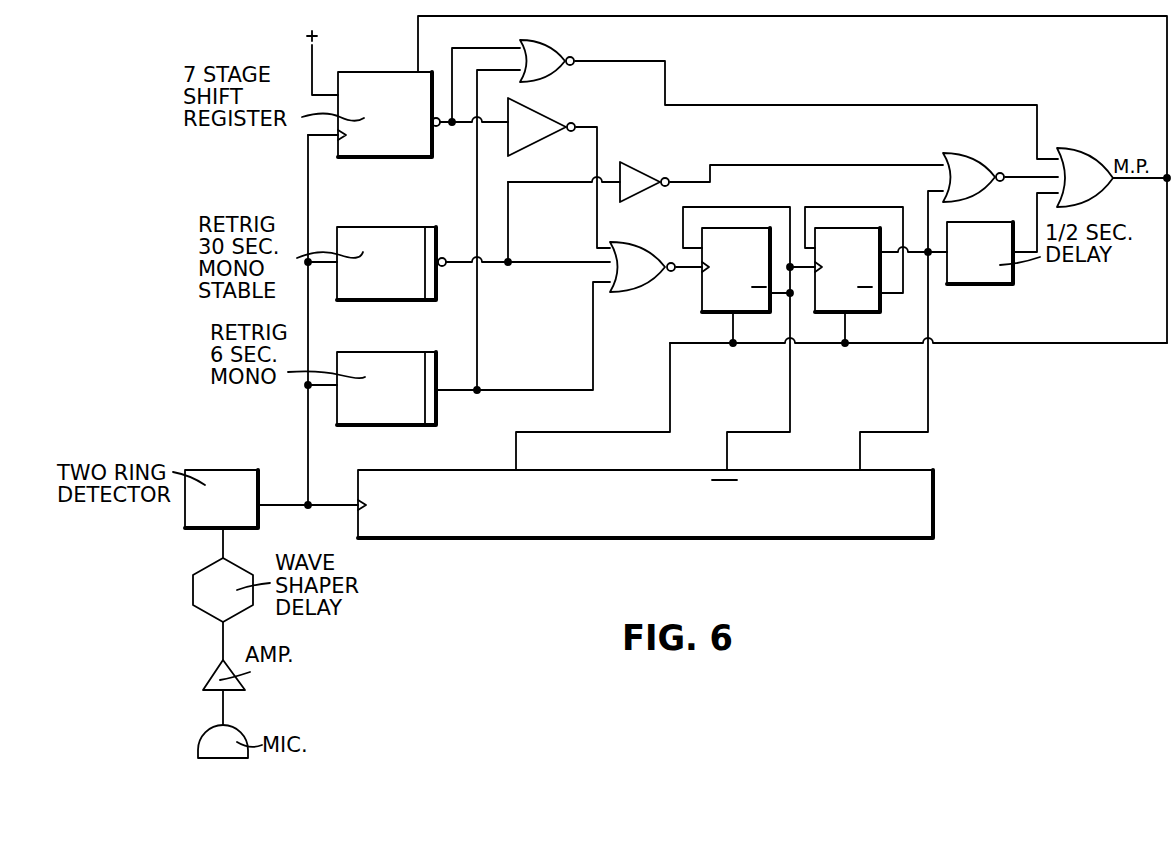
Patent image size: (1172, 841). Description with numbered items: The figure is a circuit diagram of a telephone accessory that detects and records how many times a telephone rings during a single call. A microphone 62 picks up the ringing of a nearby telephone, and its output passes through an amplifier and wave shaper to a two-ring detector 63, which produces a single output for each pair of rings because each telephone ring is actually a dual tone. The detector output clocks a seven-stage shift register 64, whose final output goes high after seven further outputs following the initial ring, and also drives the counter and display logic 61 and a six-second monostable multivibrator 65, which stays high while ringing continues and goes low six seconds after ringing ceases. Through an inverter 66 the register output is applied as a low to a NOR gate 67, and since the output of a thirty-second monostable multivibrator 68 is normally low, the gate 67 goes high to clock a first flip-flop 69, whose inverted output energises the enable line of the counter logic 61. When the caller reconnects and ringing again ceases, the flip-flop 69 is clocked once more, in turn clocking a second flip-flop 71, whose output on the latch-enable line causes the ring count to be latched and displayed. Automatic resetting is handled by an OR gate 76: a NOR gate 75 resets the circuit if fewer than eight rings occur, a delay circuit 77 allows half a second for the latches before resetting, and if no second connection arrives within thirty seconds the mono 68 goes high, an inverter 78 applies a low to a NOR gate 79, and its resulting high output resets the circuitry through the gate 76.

The counter and display logic 61 is at (890, 530).
The microphone 62 is at (235, 730).
The 2-ring detector 63 is at (237, 472).
The 7-stage shift register 64 is at (377, 78).
The 6-second monostable multivibrator 65 is at (410, 363).
The inverter 66 is at (535, 126).
The NOR gate 67 is at (633, 283).
The 30-second monostable multivibrator 68 is at (413, 242).
The first flip-flop 69 is at (707, 298).
The second flip-flop 71 is at (857, 317).
The NOR gate 75 is at (543, 55).
The OR gate 76 is at (1073, 160).
The delay circuit 77 is at (1003, 277).
The inverter 78 is at (638, 178).
The NOR gate 79 is at (963, 168).